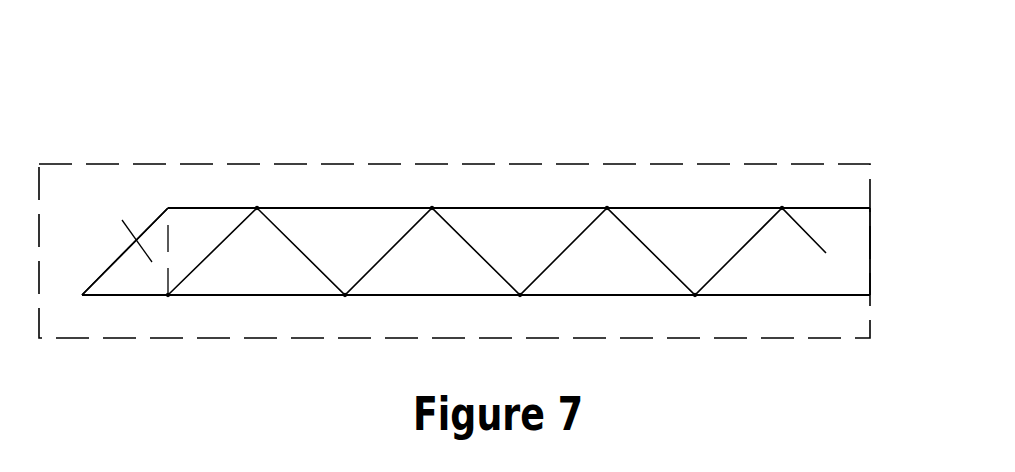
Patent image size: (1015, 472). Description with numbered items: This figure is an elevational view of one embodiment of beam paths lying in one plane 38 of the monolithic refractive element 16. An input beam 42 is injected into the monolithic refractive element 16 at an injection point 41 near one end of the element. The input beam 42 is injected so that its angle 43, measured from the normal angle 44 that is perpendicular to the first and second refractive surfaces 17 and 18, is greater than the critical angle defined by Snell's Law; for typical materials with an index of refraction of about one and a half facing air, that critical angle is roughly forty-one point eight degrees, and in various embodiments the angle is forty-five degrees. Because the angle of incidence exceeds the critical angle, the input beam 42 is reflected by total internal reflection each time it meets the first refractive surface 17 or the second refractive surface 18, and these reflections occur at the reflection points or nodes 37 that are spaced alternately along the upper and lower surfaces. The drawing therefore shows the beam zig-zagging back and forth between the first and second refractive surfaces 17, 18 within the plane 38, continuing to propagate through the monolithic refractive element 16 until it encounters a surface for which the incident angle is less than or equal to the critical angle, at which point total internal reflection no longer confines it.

The monolithic refractive element 16 is at (835, 276).
The first refractive surface 17 is at (500, 208).
The second refractive surface 18 is at (612, 297).
The reflection points or nodes 37 is at (257, 208).
The plane of the first set of N planes 38 is at (878, 127).
The injection point 41 is at (168, 258).
The input beam 42 is at (118, 296).
The angle 43 is at (122, 220).
The normal angle 44 is at (182, 193).